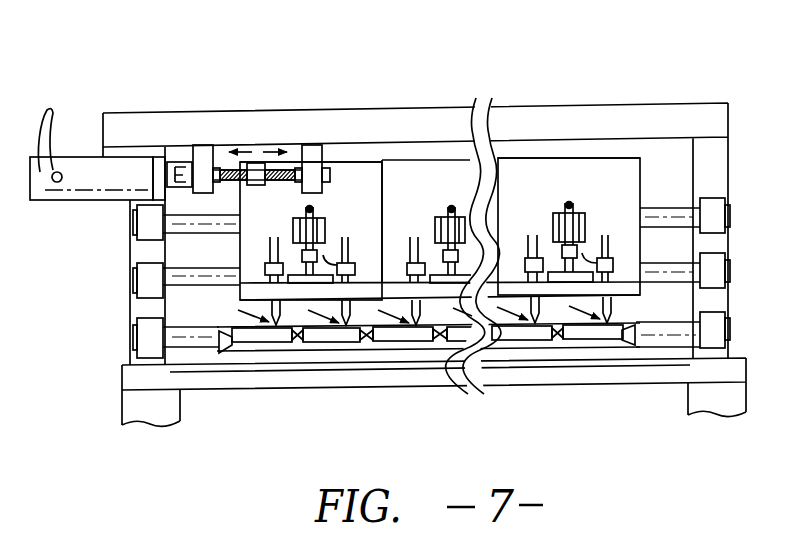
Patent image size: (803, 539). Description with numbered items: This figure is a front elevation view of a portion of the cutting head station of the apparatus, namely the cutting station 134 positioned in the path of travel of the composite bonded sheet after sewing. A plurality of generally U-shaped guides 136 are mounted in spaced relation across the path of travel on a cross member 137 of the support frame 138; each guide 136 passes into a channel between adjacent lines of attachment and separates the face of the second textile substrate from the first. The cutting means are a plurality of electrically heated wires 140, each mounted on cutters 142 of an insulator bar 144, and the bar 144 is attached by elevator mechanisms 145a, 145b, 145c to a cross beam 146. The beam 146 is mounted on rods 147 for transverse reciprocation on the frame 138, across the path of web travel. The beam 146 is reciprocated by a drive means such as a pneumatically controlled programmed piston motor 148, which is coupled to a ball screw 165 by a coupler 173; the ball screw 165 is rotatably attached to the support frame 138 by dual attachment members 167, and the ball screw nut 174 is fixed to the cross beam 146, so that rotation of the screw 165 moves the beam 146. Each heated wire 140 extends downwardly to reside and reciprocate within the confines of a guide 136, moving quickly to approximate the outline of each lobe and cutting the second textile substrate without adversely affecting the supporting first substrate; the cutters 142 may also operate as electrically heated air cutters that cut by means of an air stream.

The cutting station 134 is at (639, 70).
The U-shaped guides 136 is at (237, 338).
The cross member 137 is at (176, 327).
The support frame 138 is at (340, 122).
The electrically heated wires 140 is at (347, 324).
The cutters 142 is at (264, 266).
The insulator bar 144 is at (625, 287).
The elevator mechanism 145a is at (347, 214).
The elevator mechanism 145b is at (463, 212).
The elevator mechanism 145c is at (605, 201).
The cross beam 146 is at (395, 173).
The rods 147 is at (170, 275).
The piston motor 148 is at (95, 165).
The ball screw 165 is at (224, 168).
The dual attachment members 167 is at (202, 157).
The coupler 173 is at (180, 163).
The ball screw nut 174 is at (256, 163).